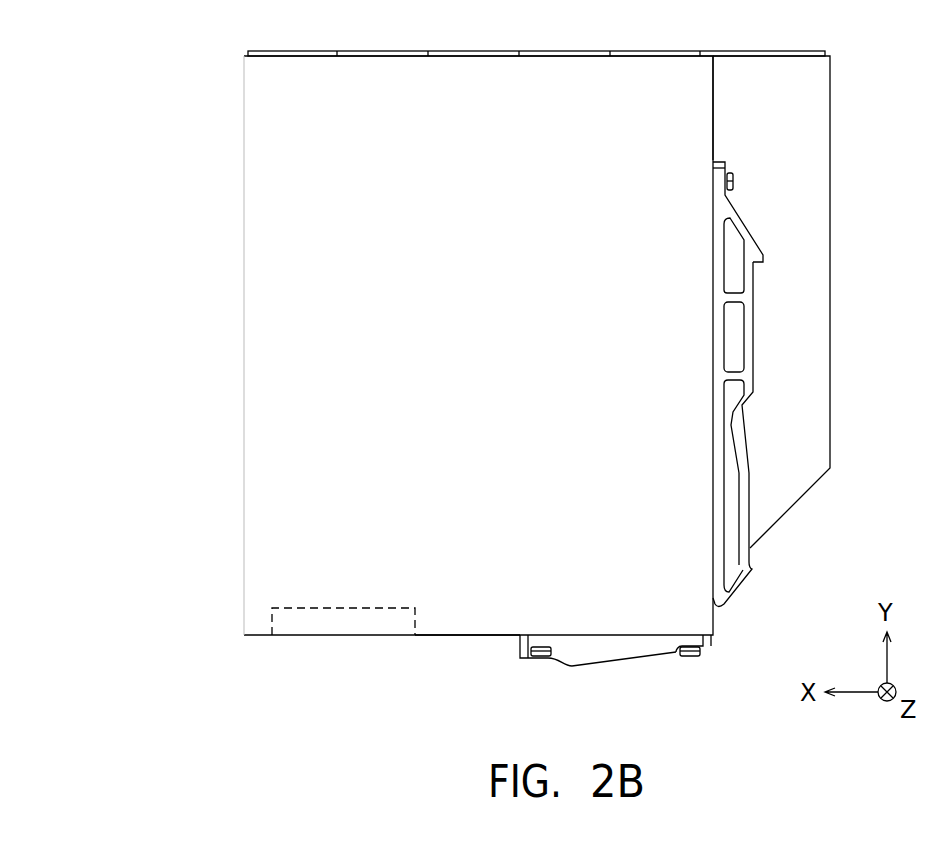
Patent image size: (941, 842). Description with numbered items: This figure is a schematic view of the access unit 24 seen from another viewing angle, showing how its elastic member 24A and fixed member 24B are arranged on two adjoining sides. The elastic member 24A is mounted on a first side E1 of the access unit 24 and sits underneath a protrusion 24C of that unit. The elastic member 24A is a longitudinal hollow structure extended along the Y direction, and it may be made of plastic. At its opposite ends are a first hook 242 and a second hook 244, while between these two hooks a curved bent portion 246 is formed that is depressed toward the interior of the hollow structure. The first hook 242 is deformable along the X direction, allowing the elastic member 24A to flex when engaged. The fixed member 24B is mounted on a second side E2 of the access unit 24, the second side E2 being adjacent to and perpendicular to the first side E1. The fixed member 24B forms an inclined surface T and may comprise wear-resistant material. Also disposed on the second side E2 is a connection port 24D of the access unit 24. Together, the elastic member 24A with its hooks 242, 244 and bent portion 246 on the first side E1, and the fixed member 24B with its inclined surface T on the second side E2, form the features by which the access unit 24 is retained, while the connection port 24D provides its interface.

The access unit 24 is at (184, 70).
The elastic member 24A is at (756, 323).
The fixed member 24B is at (587, 648).
The protrusion 24C is at (810, 183).
The connection port 24D is at (343, 636).
The first hook 242 is at (752, 569).
The second hook 244 is at (763, 258).
The curved bent portion 246 is at (742, 414).
The first side E1 is at (713, 108).
The second side E2 is at (468, 636).
The inclined surface T is at (650, 656).